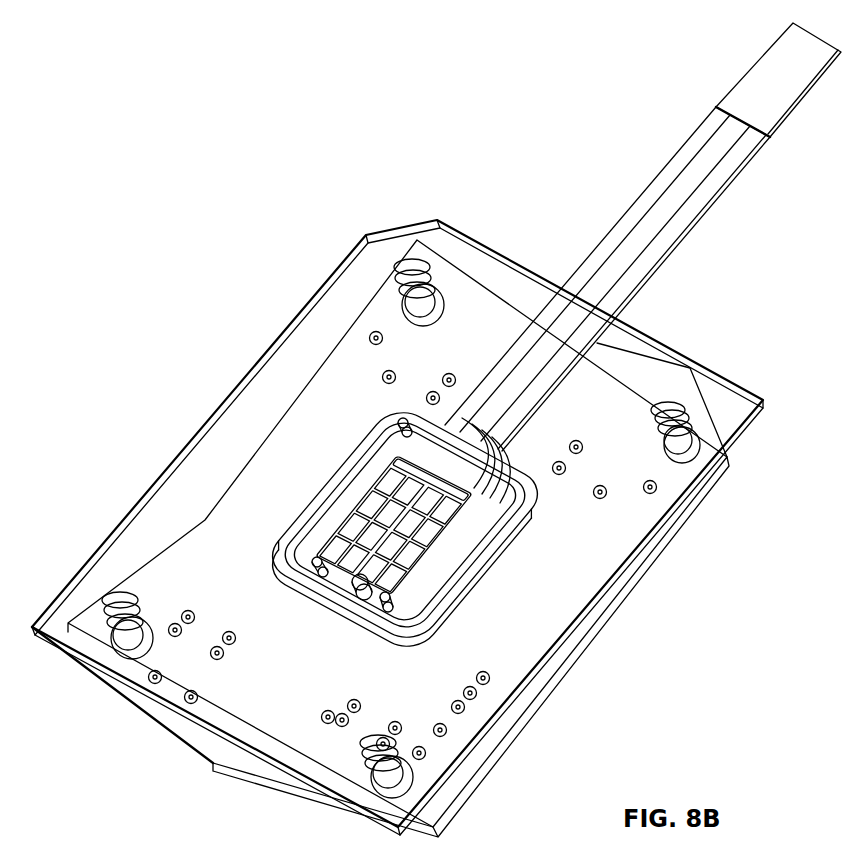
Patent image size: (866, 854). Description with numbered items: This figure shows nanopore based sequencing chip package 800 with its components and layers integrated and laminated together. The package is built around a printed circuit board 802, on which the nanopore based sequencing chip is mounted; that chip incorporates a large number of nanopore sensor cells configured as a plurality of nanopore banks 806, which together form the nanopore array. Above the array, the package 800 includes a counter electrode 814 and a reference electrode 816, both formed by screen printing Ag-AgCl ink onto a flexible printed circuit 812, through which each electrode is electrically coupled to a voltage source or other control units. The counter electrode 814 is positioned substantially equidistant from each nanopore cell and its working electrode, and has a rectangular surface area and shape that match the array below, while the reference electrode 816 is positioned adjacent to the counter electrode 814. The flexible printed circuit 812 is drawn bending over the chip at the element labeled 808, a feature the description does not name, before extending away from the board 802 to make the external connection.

The nanopore based sequencing chip package 800 is at (161, 140).
The printed circuit board 802 is at (540, 625).
The nanopore banks 806 is at (461, 503).
The flexible circuit bend 808 is at (550, 492).
The flexible printed circuit 812 is at (743, 180).
The counter electrode 814 is at (452, 476).
The reference electrode 816 is at (443, 458).